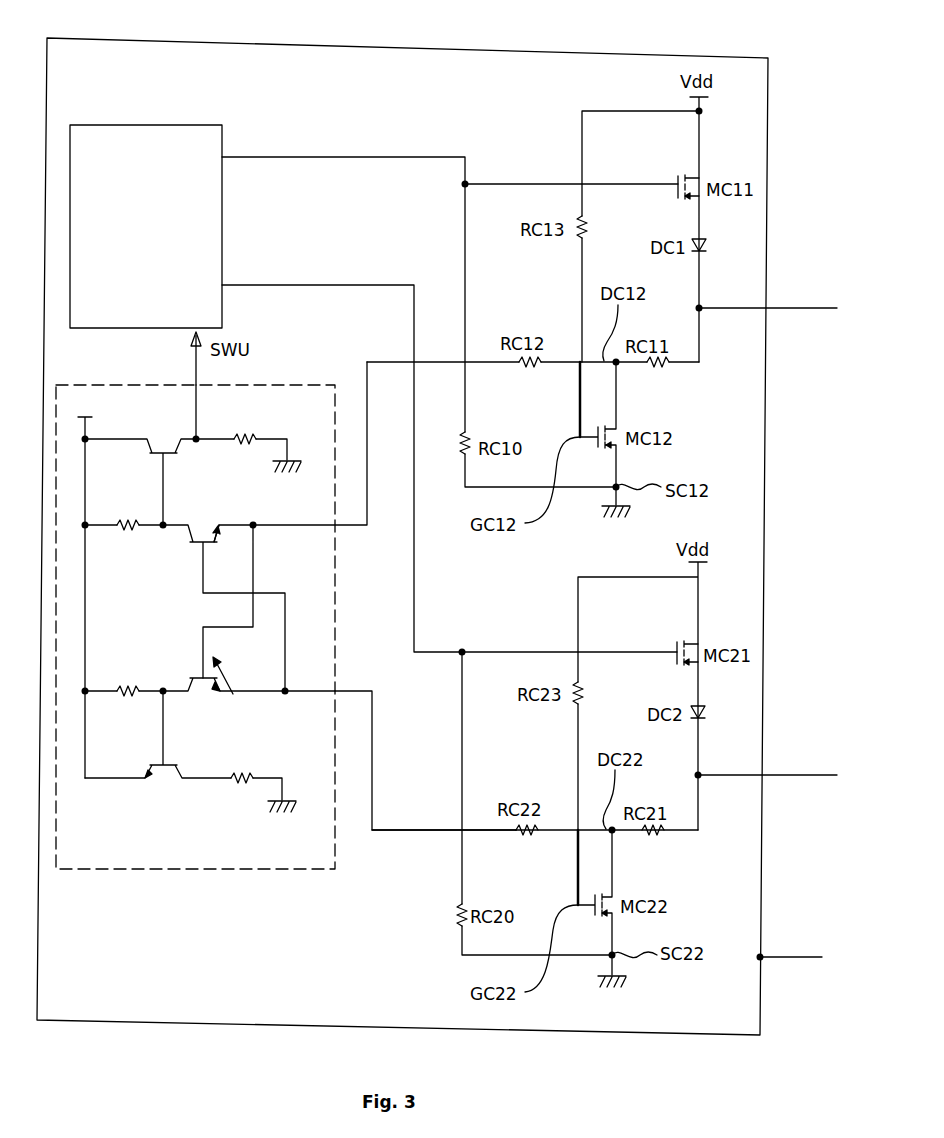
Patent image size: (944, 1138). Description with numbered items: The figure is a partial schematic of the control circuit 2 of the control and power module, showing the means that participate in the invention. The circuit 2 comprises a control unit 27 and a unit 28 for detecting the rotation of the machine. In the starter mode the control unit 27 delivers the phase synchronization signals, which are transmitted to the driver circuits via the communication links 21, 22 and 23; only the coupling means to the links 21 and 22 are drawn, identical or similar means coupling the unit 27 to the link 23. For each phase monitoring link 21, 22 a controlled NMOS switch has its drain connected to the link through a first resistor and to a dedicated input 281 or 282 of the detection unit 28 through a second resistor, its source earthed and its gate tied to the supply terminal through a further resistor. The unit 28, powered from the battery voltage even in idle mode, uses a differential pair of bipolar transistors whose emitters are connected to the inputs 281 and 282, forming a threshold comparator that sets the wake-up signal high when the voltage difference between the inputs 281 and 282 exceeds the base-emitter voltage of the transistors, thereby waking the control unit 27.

The control circuit 2 is at (485, 48).
The control unit 27 is at (145, 125).
The unit for detecting the rotation of the machine 28 is at (273, 869).
The dedicated input of the detection unit 281 is at (345, 528).
The dedicated input of the detection unit 282 is at (333, 692).
The communication link 21 is at (805, 310).
The communication link 22 is at (805, 777).
The communication link 23 is at (800, 960).